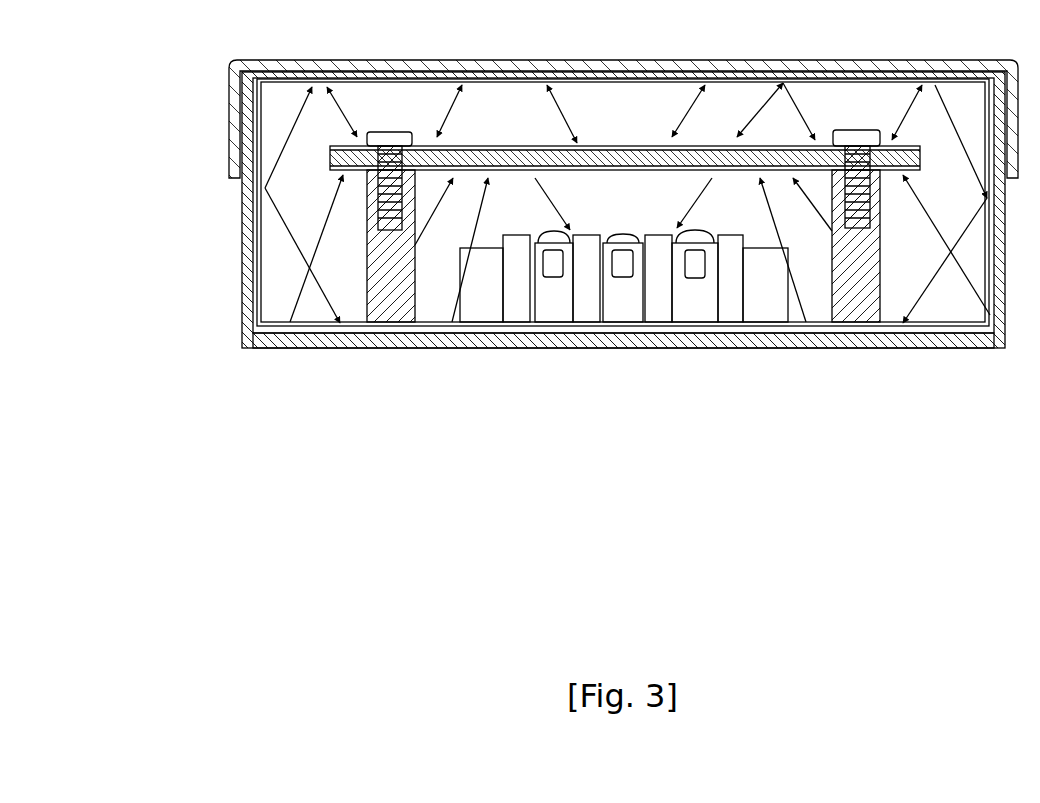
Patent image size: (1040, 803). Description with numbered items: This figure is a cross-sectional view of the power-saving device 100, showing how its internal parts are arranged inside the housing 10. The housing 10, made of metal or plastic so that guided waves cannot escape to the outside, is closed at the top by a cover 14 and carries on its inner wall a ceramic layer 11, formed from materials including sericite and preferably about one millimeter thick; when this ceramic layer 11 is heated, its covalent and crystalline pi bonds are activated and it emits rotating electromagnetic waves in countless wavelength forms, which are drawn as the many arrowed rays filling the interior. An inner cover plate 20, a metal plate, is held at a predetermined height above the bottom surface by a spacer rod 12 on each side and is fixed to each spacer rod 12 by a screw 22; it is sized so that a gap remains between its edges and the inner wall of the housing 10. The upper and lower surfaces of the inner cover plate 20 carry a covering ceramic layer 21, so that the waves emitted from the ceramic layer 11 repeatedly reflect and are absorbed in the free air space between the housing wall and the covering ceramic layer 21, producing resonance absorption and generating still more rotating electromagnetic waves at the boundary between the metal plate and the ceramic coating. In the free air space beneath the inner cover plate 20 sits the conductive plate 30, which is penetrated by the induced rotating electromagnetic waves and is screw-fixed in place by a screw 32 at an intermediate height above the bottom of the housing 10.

The power-saving device 100 is at (588, 204).
The housing 10 is at (250, 233).
The ceramic layer 11 is at (637, 332).
The spacer rod 12 is at (391, 324).
The cover 14 is at (840, 70).
The inner cover plate 20 is at (505, 167).
The covering ceramic layer 21 is at (625, 167).
The screw 22 is at (388, 131).
The conductive plate 30 is at (537, 244).
The screw 32 is at (736, 326).